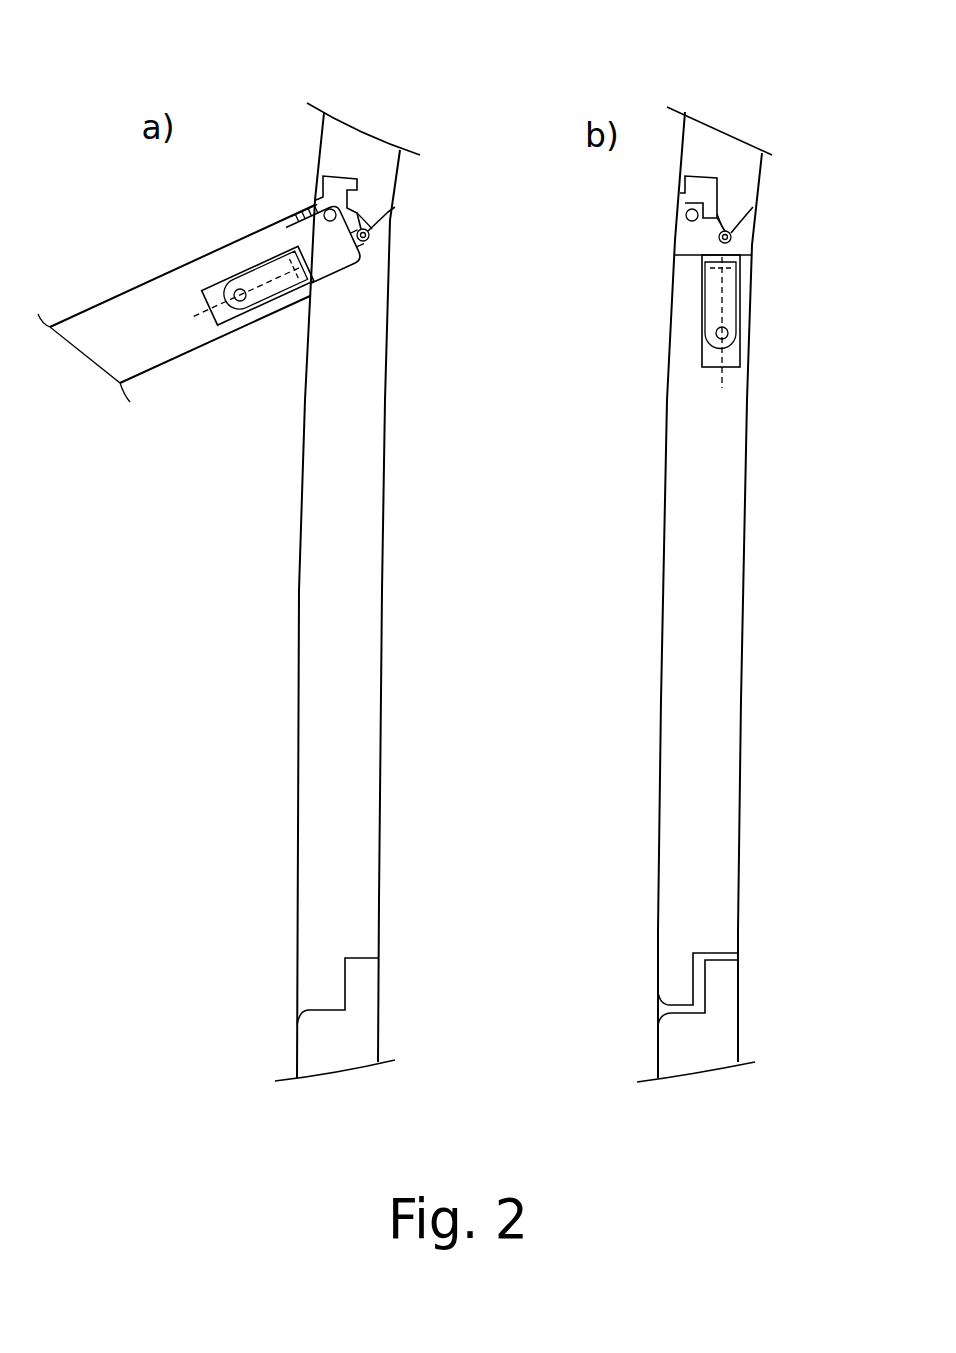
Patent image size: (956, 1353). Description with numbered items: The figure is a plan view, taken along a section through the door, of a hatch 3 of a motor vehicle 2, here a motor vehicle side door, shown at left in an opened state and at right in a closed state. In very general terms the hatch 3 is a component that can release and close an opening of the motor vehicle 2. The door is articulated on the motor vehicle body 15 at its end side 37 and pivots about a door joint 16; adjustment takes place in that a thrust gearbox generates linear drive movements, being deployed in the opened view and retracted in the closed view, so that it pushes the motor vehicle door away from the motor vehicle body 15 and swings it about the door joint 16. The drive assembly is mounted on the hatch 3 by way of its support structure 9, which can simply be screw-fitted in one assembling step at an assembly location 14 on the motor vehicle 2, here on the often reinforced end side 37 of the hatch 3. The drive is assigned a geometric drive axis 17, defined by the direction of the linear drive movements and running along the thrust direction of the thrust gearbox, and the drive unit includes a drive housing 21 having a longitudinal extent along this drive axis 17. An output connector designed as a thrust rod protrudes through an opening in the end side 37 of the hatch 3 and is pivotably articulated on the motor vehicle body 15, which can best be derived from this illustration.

The motor vehicle 2 is at (367, 150).
The hatch 3 is at (107, 313).
The support structure 9 is at (236, 266).
The assembly location 14 is at (287, 233).
The motor vehicle body 15 is at (383, 447).
The door joint 16 is at (325, 211).
The geometric drive axis 17 is at (204, 310).
The drive housing 21 is at (238, 323).
The end side 37 is at (410, 205).